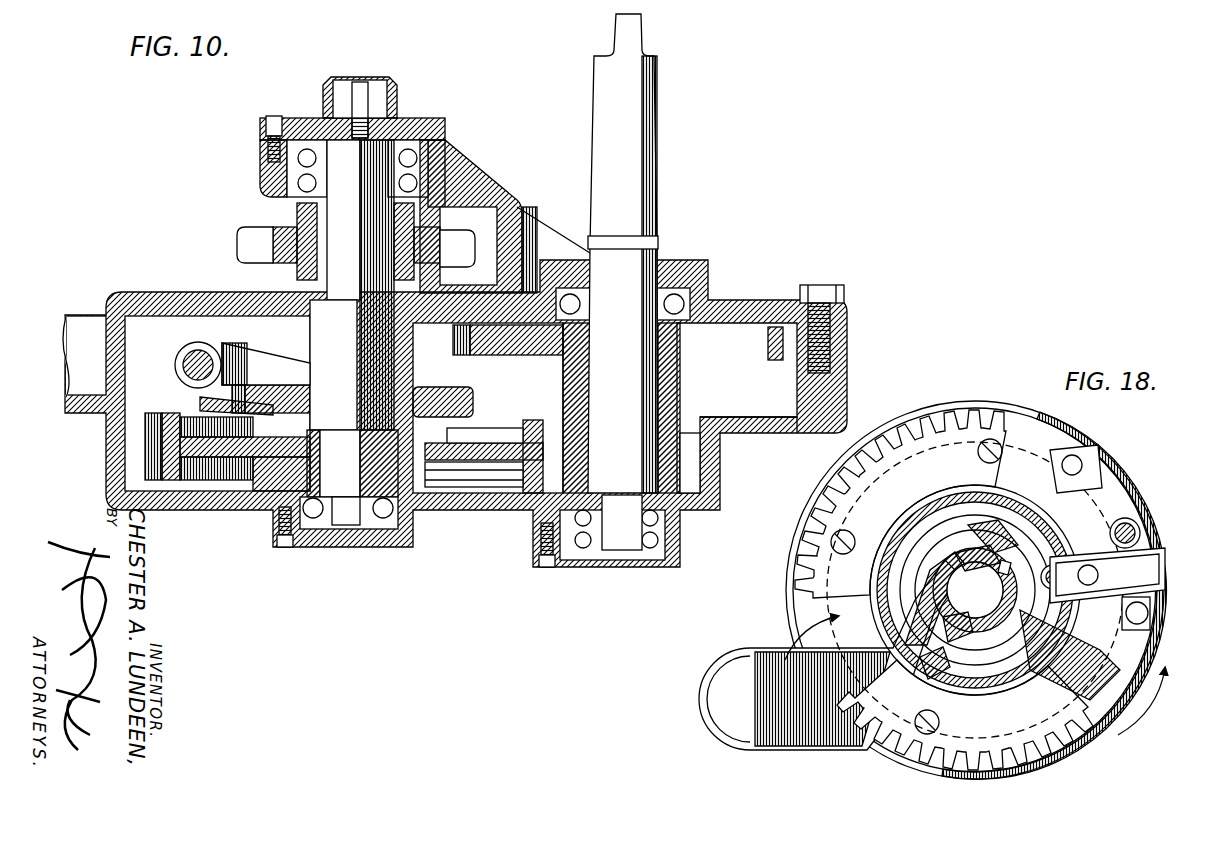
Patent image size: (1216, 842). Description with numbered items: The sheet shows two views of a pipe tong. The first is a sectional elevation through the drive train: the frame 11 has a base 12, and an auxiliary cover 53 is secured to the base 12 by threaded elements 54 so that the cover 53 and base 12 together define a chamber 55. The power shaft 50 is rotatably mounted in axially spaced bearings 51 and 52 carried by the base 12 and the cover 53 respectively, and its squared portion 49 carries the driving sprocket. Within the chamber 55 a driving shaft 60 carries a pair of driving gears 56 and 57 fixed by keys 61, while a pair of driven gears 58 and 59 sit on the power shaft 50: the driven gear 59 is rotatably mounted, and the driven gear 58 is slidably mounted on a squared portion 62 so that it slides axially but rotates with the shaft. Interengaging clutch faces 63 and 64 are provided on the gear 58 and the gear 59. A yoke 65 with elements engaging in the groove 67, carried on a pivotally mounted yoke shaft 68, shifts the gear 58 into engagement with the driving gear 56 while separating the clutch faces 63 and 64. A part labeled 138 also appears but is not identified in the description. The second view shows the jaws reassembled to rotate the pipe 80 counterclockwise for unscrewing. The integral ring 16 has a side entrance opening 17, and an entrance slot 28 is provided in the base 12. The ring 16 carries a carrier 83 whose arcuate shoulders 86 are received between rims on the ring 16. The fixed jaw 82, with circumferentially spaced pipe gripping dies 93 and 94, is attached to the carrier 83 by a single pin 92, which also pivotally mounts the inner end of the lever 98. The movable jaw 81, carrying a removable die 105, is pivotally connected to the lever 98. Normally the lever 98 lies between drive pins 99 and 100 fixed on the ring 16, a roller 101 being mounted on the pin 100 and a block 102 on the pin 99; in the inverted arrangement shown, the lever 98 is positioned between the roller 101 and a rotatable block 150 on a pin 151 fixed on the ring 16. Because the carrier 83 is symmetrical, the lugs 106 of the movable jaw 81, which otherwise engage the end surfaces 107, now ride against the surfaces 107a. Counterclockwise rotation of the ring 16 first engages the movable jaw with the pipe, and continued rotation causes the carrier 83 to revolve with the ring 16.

In FIG. 10, the frame 11 is at (850, 366).
In FIG. 10, the base 12 is at (75, 367).
In FIG. 10, the squared portion 49 is at (370, 212).
In FIG. 10, the power shaft 50 is at (403, 119).
In FIG. 10, the bearing 51 is at (385, 520).
In FIG. 10, the bearing 52 is at (448, 142).
In FIG. 10, the auxiliary cover 53 is at (522, 207).
In FIG. 10, the threaded elements 54 is at (845, 298).
In FIG. 10, the chamber 55 is at (770, 420).
In FIG. 10, the driving gear 56 is at (775, 360).
In FIG. 10, the driving gear 57 is at (690, 472).
In FIG. 10, the driven gear 58 is at (470, 395).
In FIG. 10, the driven gear 59 is at (150, 455).
In FIG. 10, the driving shaft 60 is at (648, 180).
In FIG. 10, the keys 61 is at (575, 395).
In FIG. 10, the squared portion 62 is at (315, 345).
In FIG. 10, the clutch face 63 is at (455, 442).
In FIG. 10, the clutch face 64 is at (435, 466).
In FIG. 10, the yoke 65 is at (245, 352).
In FIG. 10, the groove 67 is at (215, 408).
In FIG. 10, the yoke shaft 68 is at (185, 355).
In FIG. 10, the gear 138 is at (460, 240).
In FIG. 18, the integral ring 16 is at (1130, 480).
In FIG. 18, the side entrance opening 17 is at (780, 680).
In FIG. 18, the entrance slot 28 is at (760, 650).
In FIG. 18, the pipe 80 is at (945, 605).
In FIG. 18, the movable jaw 81 is at (1095, 660).
In FIG. 18, the fixed jaw 82 is at (958, 560).
In FIG. 18, the carrier 83 is at (950, 582).
In FIG. 18, the arcuate shoulder 86 is at (958, 432).
In FIG. 18, the attaching pin 92 is at (1053, 565).
In FIG. 18, the pipe gripping die 93 is at (982, 538).
In FIG. 18, the pipe gripping die 94 is at (1003, 568).
In FIG. 18, the lever 98 is at (1140, 560).
In FIG. 18, the drive pin 99 is at (1075, 455).
In FIG. 18, the drive pin 100 is at (1135, 522).
In FIG. 18, the roller 101 is at (1137, 530).
In FIG. 18, the block 102 is at (1100, 470).
In FIG. 18, the removable pipe gripping die 105 is at (975, 590).
In FIG. 18, the lugs 106 is at (920, 662).
In FIG. 18, the end surfaces 107 is at (910, 572).
In FIG. 18, the surfaces 107a is at (945, 628).
In FIG. 18, the rotatable block 150 is at (1162, 688).
In FIG. 18, the pin 151 is at (1150, 610).